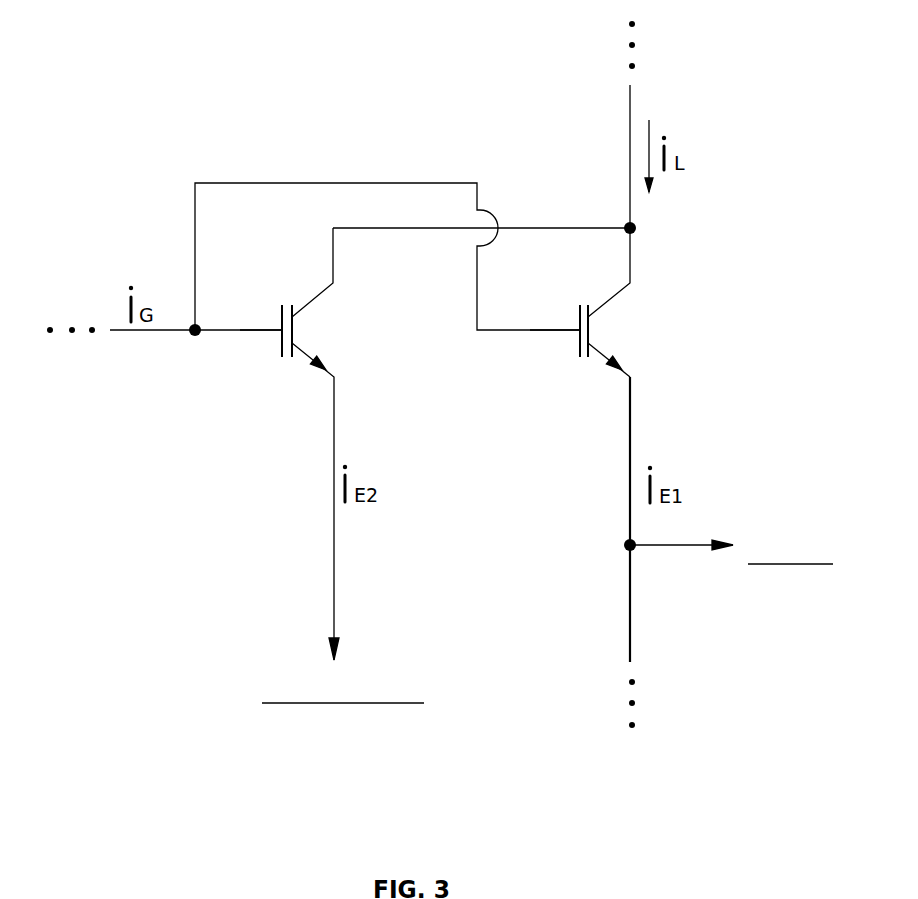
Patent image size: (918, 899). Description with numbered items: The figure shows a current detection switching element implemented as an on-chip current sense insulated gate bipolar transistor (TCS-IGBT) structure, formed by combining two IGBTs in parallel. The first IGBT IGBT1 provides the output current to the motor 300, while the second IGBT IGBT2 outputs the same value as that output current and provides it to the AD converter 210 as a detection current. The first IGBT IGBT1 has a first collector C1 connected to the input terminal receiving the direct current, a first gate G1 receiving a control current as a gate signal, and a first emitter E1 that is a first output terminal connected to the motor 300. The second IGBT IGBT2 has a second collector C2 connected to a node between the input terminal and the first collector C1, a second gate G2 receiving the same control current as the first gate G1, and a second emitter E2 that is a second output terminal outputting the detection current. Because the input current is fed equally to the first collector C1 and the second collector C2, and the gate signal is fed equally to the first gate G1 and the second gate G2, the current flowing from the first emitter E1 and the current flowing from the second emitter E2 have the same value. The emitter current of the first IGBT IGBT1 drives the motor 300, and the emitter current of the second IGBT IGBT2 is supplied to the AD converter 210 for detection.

The AD converter 210 is at (346, 708).
The motor 300 is at (790, 568).
The first IGBT IGBT1 is at (605, 445).
The second IGBT IGBT2 is at (305, 444).
The first collector C1 is at (634, 272).
The first gate G1 is at (555, 351).
The first emitter E1 is at (633, 502).
The second collector C2 is at (337, 272).
The second gate G2 is at (259, 351).
The second emitter E2 is at (336, 501).